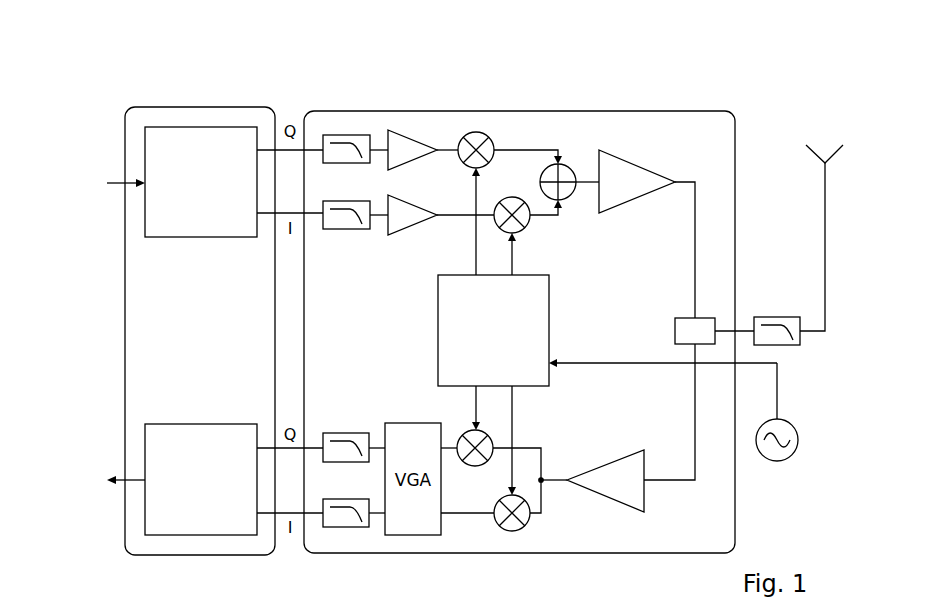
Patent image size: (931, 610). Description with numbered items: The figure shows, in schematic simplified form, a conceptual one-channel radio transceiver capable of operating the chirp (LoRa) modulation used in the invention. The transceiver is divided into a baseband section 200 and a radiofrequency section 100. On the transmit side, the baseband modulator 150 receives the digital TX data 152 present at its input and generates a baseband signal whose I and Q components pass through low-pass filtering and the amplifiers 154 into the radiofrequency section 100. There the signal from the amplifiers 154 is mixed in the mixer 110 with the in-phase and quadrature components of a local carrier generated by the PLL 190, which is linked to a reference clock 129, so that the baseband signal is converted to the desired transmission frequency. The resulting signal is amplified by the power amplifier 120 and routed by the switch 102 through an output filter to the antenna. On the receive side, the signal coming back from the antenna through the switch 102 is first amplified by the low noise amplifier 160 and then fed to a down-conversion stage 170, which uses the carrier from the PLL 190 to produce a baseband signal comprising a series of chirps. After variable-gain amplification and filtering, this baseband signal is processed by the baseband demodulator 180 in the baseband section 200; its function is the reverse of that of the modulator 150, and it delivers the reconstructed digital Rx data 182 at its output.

The radiofrequency section 100 is at (735, 283).
The switch 102 is at (675, 318).
The mixer 110 is at (482, 132).
The power amplifier 120 is at (655, 170).
The reference clock 129 is at (779, 461).
The modulator 150 is at (240, 127).
The digital TX data 152 is at (82, 167).
The amplifier 154 is at (393, 130).
The low noise amplifier 160 is at (645, 495).
The down-conversion stage 170 is at (510, 531).
The baseband demodulator 180 is at (240, 535).
The digital Rx data 182 is at (83, 494).
The PLL 190 is at (428, 283).
The baseband section 200 is at (125, 313).